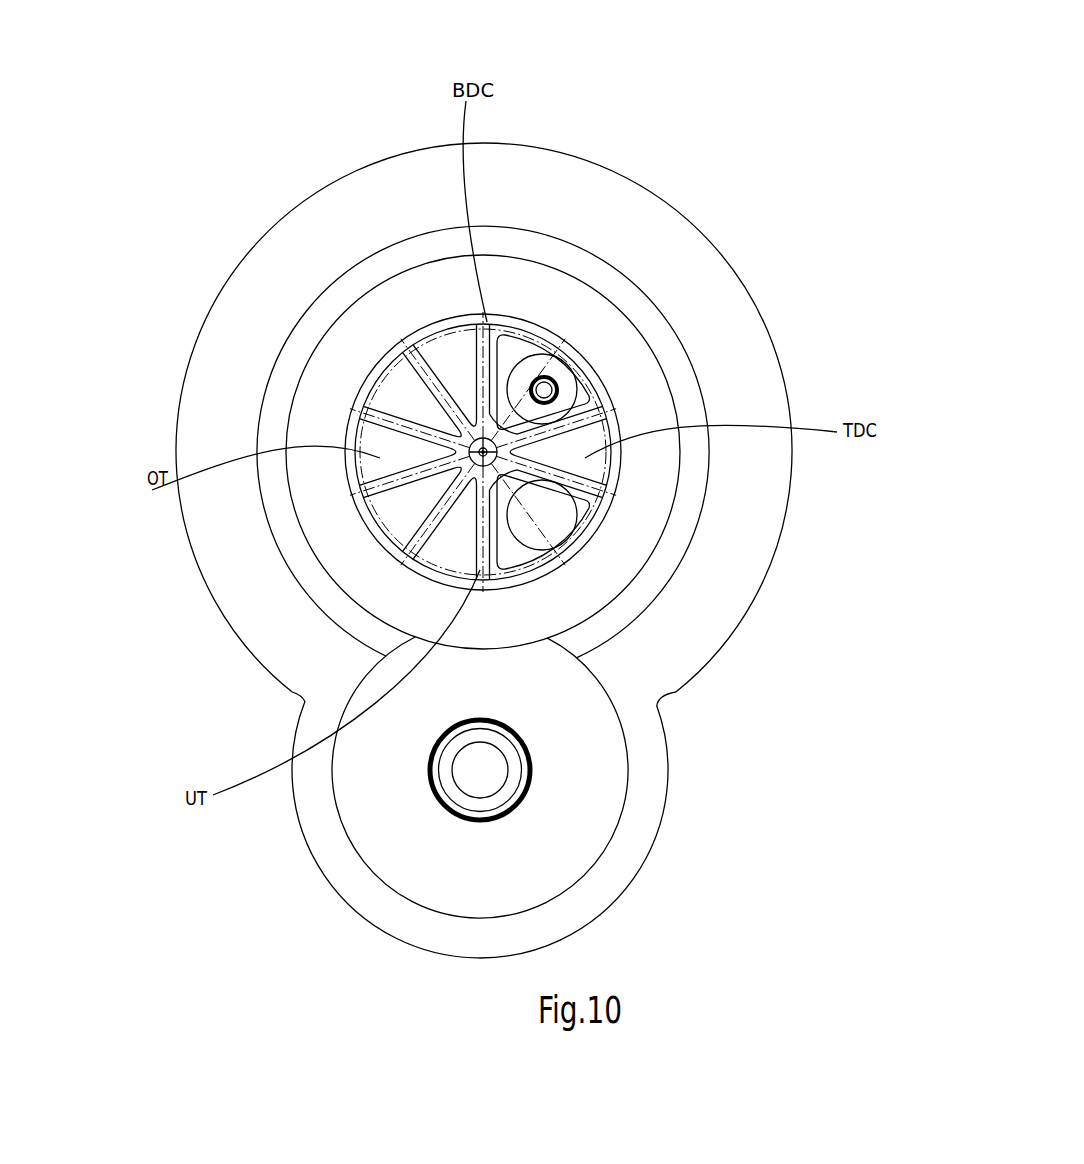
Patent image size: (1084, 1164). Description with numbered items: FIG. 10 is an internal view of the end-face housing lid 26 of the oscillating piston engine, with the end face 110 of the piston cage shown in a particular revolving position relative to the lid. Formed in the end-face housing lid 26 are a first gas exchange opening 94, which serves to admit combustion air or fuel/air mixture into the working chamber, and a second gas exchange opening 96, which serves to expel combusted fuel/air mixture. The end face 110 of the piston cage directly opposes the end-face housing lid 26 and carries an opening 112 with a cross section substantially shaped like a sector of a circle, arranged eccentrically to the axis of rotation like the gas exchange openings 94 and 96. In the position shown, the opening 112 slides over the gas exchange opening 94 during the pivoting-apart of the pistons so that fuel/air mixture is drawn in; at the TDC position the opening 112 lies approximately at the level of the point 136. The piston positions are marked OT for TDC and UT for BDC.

The end-face housing lid 26 is at (302, 160).
The first gas exchange opening 94 is at (534, 382).
The second gas exchange opening 96 is at (556, 520).
The end face of the piston cage 110 is at (407, 387).
The opening 112 is at (560, 372).
The point 136 is at (380, 460).